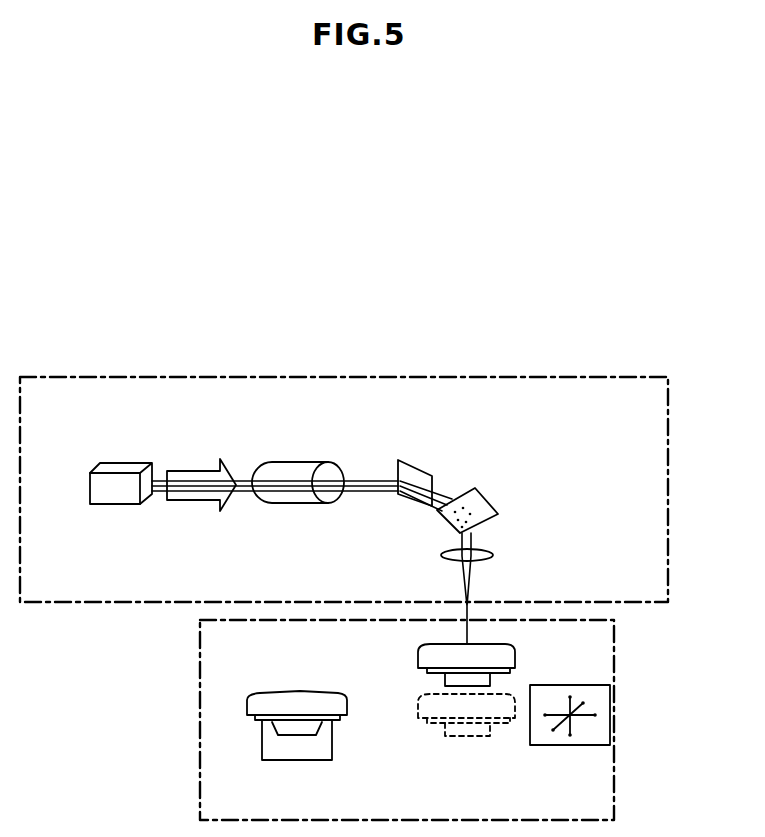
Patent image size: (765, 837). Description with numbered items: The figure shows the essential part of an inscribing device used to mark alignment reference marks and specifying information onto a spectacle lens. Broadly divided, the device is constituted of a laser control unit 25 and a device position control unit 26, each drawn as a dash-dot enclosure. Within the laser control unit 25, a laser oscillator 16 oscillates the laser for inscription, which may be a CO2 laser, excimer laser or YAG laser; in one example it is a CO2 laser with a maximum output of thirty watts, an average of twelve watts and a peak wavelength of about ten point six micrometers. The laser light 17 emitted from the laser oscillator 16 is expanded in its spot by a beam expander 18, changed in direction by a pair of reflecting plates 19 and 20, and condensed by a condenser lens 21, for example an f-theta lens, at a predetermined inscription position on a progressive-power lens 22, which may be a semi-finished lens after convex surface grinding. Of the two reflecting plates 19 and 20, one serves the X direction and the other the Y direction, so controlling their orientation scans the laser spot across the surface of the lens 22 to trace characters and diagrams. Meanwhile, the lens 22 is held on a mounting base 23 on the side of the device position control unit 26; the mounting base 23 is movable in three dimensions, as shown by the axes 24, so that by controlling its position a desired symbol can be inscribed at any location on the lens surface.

The laser oscillator 16 is at (122, 468).
The laser light 17 is at (205, 472).
The beam expander 18 is at (299, 469).
The reflecting plate 19 is at (426, 470).
The reflecting plate 20 is at (485, 498).
The condenser lens 21 is at (490, 553).
The progressive-power lens 22 is at (501, 654).
The mounting base 23 is at (495, 680).
The three-dimensional movement directions 24 is at (614, 691).
The laser control unit 25 is at (668, 476).
The device position control unit 26 is at (200, 658).